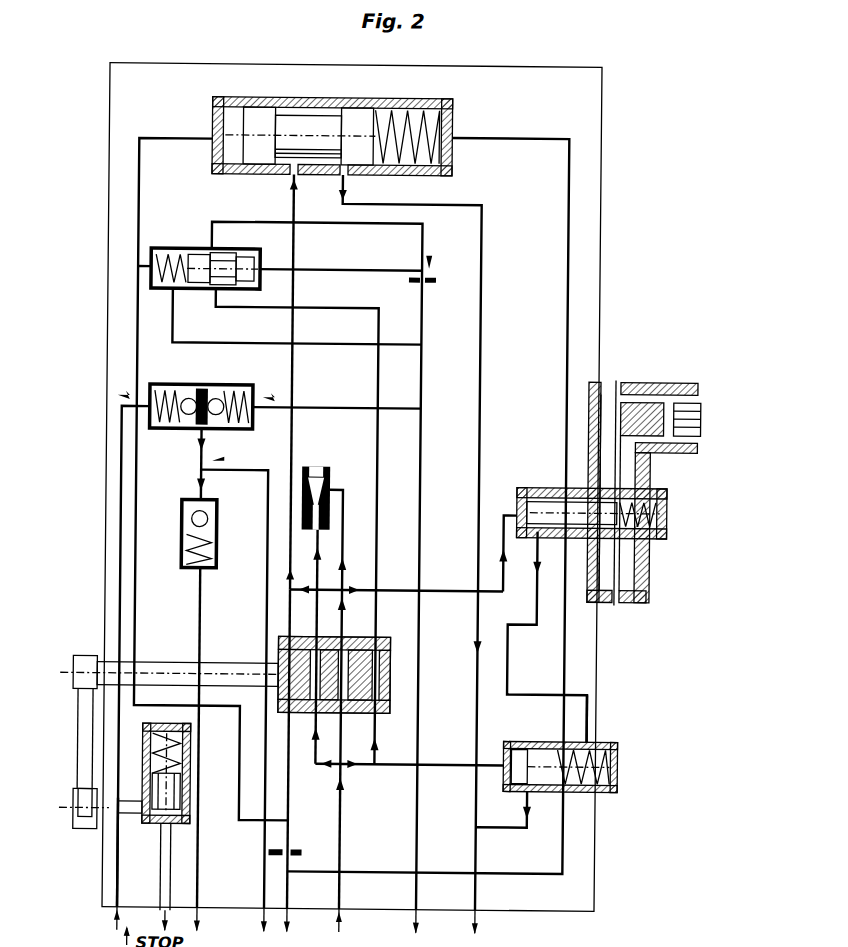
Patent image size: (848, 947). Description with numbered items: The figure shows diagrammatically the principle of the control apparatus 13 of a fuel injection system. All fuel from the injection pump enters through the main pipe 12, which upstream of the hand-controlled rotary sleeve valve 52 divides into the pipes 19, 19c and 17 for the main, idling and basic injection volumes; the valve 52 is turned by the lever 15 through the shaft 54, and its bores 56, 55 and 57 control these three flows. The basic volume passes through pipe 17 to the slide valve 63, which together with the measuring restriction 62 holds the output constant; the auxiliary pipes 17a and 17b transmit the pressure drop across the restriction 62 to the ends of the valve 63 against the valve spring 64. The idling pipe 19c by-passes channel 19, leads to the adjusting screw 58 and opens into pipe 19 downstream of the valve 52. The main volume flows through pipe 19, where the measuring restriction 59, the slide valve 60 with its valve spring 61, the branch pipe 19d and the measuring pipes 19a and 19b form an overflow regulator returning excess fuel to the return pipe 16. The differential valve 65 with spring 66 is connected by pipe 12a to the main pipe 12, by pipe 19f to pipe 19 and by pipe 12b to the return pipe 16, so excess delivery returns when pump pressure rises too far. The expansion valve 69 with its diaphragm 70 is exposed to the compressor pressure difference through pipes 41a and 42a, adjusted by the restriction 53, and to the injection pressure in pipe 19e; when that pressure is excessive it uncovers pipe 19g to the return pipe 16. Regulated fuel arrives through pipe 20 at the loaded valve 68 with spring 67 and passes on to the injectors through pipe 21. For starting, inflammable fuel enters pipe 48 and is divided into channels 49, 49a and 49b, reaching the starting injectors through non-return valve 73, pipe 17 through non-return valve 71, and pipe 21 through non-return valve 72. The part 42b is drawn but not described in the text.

The main pipe 12 is at (344, 906).
The pipe 12a is at (388, 766).
The pipe 12b is at (515, 822).
The control apparatus 13 is at (598, 135).
The lever 15 is at (84, 658).
The return pipe 16 is at (482, 307).
The pipe 17 is at (314, 220).
The auxiliary pipe 17a is at (323, 275).
The auxiliary pipe 17b is at (325, 346).
The pipe 19 is at (291, 632).
The measuring pipe 19a is at (149, 268).
The measuring pipe 19b is at (568, 311).
The pipe 19c is at (316, 558).
The branch pipe 19d is at (289, 438).
The pipe 19e is at (503, 580).
The pipe 19f is at (591, 711).
The pipe 19g is at (514, 625).
The pipe 20 is at (168, 904).
The pipe 21 is at (123, 904).
The pipe 41a is at (680, 380).
The pipe 42a is at (653, 434).
The housing part 42b is at (665, 421).
The pipe 48 is at (268, 614).
The pipe 49 is at (198, 490).
The pipe 49a is at (283, 407).
The pipe 49b is at (150, 406).
The rotary sleeve valve 52 is at (293, 665).
The adjustable restriction 53 is at (700, 411).
The shaft 54 is at (240, 677).
The bore 55 is at (352, 690).
The bore 56 is at (357, 672).
The bore 57 is at (340, 661).
The adjusting screw 58 is at (330, 472).
The measuring restriction 59 is at (296, 853).
The slide valve 60 is at (437, 146).
The valve spring 61 is at (414, 126).
The measuring restriction 62 is at (429, 278).
The slide valve 63 is at (207, 250).
The valve spring 64 is at (222, 262).
The differential valve 65 is at (620, 757).
The spring 66 is at (620, 772).
The spring 67 is at (163, 793).
The loaded valve 68 is at (145, 825).
The expansion valve 69 is at (660, 521).
The diaphragm 70 is at (652, 498).
The non return valve 71 is at (182, 387).
The non return valve 72 is at (205, 402).
The non return valve 73 is at (192, 520).